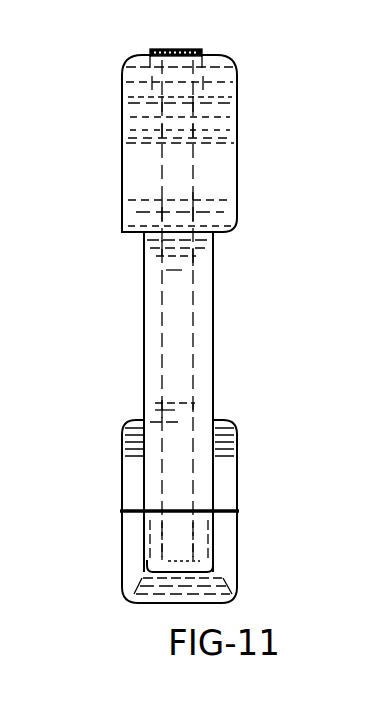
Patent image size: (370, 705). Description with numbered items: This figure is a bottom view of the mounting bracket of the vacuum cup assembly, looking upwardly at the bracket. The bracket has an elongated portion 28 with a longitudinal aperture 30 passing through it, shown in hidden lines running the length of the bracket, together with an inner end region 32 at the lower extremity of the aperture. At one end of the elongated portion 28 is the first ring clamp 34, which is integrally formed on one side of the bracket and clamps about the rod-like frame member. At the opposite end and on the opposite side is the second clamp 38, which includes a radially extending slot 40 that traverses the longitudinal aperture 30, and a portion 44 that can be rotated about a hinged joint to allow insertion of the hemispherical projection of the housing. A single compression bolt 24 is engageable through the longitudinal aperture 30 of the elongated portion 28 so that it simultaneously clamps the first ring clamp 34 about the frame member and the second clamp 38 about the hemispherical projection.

The compression bolt 24 is at (196, 50).
The elongated portion 28 is at (214, 343).
The longitudinal aperture 30 is at (170, 319).
The inner end 32 is at (170, 554).
The first ring clamp 34 is at (238, 211).
The second clamp 38 is at (238, 492).
The radially extending slot 40 is at (122, 512).
The portion of the second clamp 44 is at (238, 581).